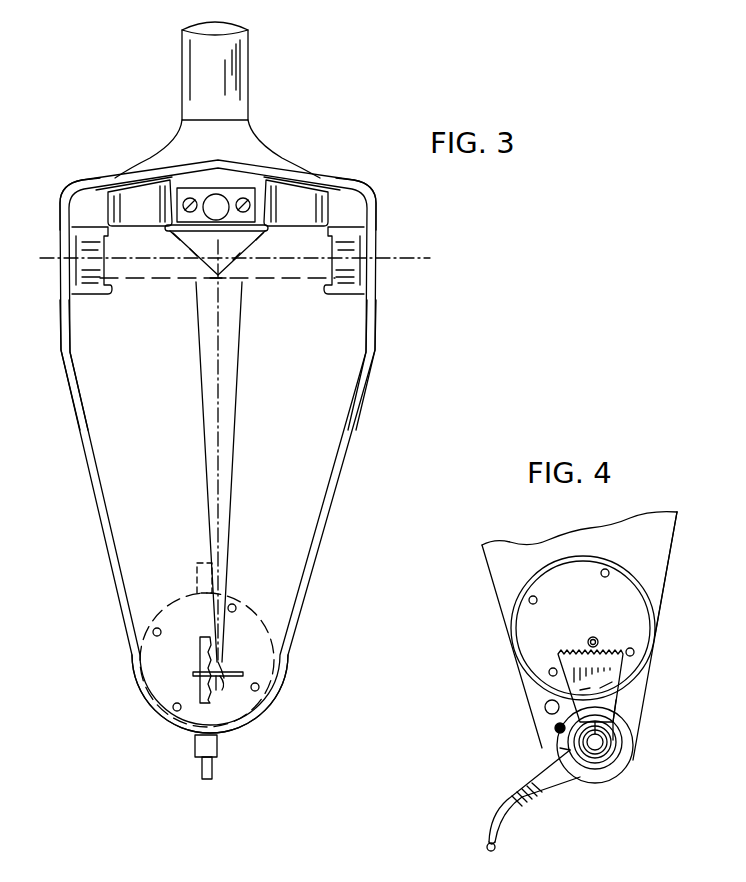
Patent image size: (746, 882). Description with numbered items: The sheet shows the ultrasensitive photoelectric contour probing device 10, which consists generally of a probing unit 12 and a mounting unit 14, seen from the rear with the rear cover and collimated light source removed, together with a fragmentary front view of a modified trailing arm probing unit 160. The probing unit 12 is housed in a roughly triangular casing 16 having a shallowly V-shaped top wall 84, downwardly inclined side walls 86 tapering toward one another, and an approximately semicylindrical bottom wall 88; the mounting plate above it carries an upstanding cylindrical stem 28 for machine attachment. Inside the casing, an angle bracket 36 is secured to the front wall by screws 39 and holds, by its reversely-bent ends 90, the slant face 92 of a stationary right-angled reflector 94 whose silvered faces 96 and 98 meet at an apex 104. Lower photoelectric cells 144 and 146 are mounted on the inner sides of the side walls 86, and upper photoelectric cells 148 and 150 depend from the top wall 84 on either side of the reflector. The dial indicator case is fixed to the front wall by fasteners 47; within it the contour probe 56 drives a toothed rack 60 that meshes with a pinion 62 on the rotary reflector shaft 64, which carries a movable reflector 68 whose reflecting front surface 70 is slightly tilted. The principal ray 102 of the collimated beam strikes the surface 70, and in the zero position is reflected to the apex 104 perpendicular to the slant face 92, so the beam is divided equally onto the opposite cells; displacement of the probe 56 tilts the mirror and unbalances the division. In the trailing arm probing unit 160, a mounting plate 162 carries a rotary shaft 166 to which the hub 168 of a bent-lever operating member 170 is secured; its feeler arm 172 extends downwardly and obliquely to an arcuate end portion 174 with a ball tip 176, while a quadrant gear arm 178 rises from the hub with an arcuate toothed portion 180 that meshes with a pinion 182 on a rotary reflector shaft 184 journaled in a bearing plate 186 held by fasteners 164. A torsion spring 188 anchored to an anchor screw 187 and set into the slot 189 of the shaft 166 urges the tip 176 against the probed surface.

In FIG. 3, the photoelectric contour probing device 10 is at (330, 165).
In FIG. 3, the probing unit 12 is at (78, 179).
In FIG. 3, the mounting unit 14 is at (262, 128).
In FIG. 3, the casing 16 is at (380, 202).
In FIG. 3, the cylindrical stem 28 is at (240, 78).
In FIG. 3, the angle bracket 36 is at (232, 188).
In FIG. 3, the screws 39 is at (194, 200).
In FIG. 3, the fasteners 47 is at (232, 608).
In FIG. 3, the contour probe 56 is at (213, 767).
In FIG. 3, the toothed rack 60 is at (198, 657).
In FIG. 3, the pinion 62 is at (224, 682).
In FIG. 3, the rotary reflector shaft 64 is at (219, 692).
In FIG. 3, the movable reflector 68 is at (198, 678).
In FIG. 3, the reflecting front surface 70 is at (226, 670).
In FIG. 3, the top wall 84 is at (188, 172).
In FIG. 3, the side walls 86 is at (62, 330).
In FIG. 3, the bottom wall 88 is at (250, 716).
In FIG. 3, the reversely-bent ends 90 is at (170, 233).
In FIG. 3, the slant face 92 is at (190, 232).
In FIG. 3, the stationary right-angled reflector 94 is at (256, 234).
In FIG. 3, the right-angled face 96 is at (240, 253).
In FIG. 3, the right-angled face 98 is at (191, 256).
In FIG. 3, the principal ray 102 is at (218, 352).
In FIG. 3, the apex 104 is at (216, 280).
In FIG. 3, the lower photoelectric control cell 144 is at (340, 252).
In FIG. 3, the lower photoelectric control cell 146 is at (78, 246).
In FIG. 3, the upper photoelectric cell 148 is at (316, 206).
In FIG. 3, the upper photoelectric cell 150 is at (114, 208).
In FIG. 4, the trailing arm probing unit 160 is at (648, 664).
In FIG. 4, the mounting plate 162 is at (683, 573).
In FIG. 4, the fasteners 164 is at (615, 568).
In FIG. 4, the rotary shaft 166 is at (612, 748).
In FIG. 4, the hub 168 is at (568, 748).
In FIG. 4, the operating member 170 is at (618, 714).
In FIG. 4, the feeler arm 172 is at (532, 782).
In FIG. 4, the arcuate end portion 174 is at (498, 828).
In FIG. 4, the ball tip 176 is at (496, 848).
In FIG. 4, the quadrant gear arm 178 is at (618, 692).
In FIG. 4, the arcuate toothed portion 180 is at (570, 652).
In FIG. 4, the pinion 182 is at (600, 642).
In FIG. 4, the rotary reflector shaft 184 is at (594, 638).
In FIG. 4, the bearing plate 186 is at (548, 580).
In FIG. 4, the anchor screw 187 is at (554, 728).
In FIG. 4, the torsion spring 188 is at (622, 742).
In FIG. 4, the slot 189 is at (596, 730).